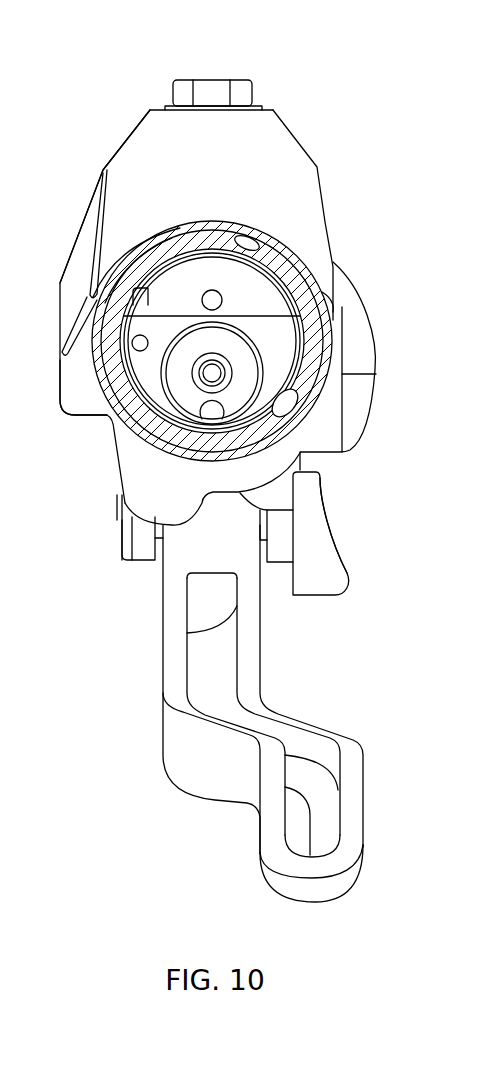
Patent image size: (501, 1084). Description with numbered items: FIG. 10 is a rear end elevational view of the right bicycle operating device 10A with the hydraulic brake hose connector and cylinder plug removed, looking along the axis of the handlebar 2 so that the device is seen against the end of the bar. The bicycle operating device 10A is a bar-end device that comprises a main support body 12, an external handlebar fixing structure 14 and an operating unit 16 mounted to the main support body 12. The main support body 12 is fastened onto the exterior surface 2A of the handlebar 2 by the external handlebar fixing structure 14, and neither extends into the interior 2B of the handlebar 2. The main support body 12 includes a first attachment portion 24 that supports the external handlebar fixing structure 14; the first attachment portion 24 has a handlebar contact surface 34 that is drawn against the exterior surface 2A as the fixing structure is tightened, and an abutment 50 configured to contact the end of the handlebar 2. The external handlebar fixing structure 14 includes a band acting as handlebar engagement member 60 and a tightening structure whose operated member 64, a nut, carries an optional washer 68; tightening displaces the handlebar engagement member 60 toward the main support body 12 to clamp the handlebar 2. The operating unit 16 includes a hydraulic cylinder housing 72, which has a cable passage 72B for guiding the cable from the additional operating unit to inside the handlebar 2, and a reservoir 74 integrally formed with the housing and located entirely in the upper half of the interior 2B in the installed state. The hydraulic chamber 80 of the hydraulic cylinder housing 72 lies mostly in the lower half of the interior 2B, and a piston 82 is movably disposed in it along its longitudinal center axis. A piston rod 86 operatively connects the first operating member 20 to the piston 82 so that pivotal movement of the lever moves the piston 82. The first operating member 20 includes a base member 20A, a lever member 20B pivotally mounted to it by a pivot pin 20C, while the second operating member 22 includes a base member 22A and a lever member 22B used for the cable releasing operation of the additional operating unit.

The bicycle operating device 10A is at (101, 96).
The main support body 12 is at (292, 128).
The external handlebar fixing structure 14 is at (259, 87).
The operating unit 16 is at (150, 418).
The handlebar 2 is at (335, 323).
The exterior surface 2A is at (317, 380).
The interior 2B is at (275, 418).
The first operating member 20 is at (159, 637).
The base member 20A is at (125, 545).
The lever member 20B is at (364, 778).
The pivot pin 20C is at (118, 496).
The second operating member 22 is at (349, 593).
The base member 22A is at (278, 493).
The lever member 22B is at (311, 542).
The first attachment portion 24 is at (147, 160).
The handlebar contact surface 34 is at (253, 243).
The abutment 50 is at (80, 378).
The handlebar engagement member 60 is at (107, 390).
The operated member 64 is at (217, 80).
The washer 68 is at (166, 106).
The hydraulic cylinder housing 72 is at (277, 340).
The cable passage 72B is at (133, 340).
The reservoir 74 is at (294, 270).
The hydraulic chamber 80 is at (203, 411).
The piston 82 is at (197, 368).
The piston rod 86 is at (233, 350).